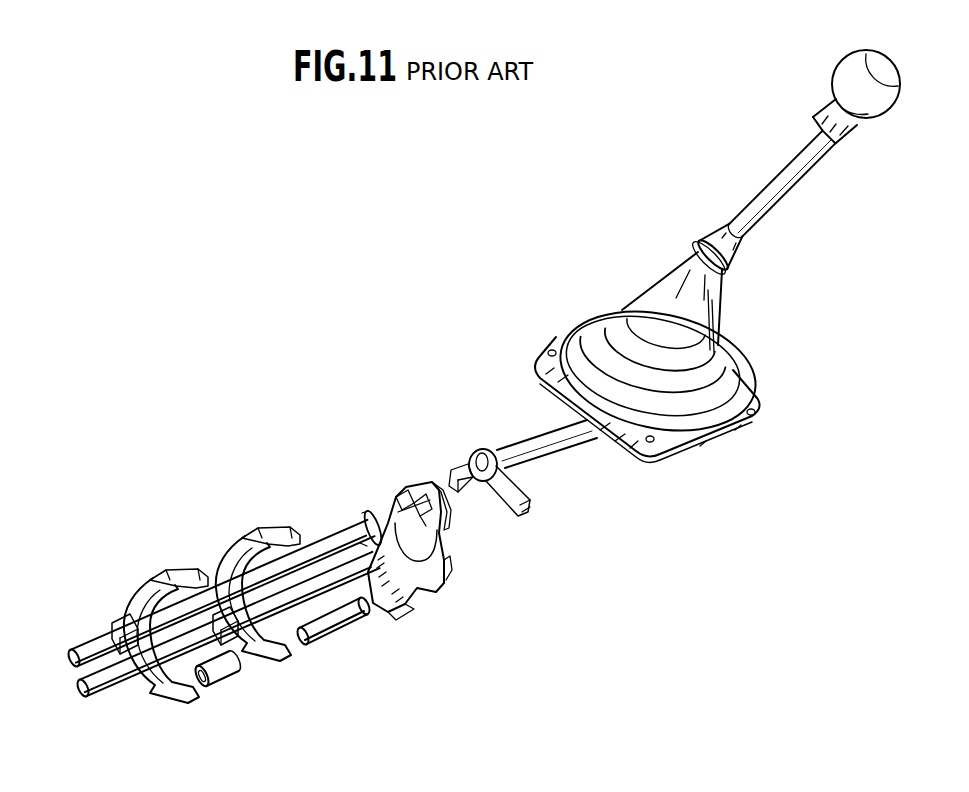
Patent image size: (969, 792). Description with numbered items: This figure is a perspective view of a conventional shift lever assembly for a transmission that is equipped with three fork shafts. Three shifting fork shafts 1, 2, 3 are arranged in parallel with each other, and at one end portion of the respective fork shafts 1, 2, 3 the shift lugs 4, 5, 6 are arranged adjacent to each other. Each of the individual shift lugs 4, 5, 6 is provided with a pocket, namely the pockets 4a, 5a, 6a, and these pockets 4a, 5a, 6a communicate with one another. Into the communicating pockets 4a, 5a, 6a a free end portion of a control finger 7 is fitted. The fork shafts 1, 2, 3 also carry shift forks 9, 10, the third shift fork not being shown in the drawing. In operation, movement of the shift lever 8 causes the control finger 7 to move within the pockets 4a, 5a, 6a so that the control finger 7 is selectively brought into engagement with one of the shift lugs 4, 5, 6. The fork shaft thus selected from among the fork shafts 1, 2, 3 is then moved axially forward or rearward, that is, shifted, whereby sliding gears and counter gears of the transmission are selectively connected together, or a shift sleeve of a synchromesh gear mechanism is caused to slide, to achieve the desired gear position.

The shifting fork shaft 1 is at (87, 643).
The shifting fork shaft 2 is at (113, 683).
The shifting fork shaft 3 is at (353, 620).
The shift lug 4 is at (414, 521).
The pocket 4a is at (410, 492).
The shift lug 5 is at (443, 503).
The pocket 5a is at (437, 495).
The shift lug 6 is at (437, 520).
The pocket 6a is at (423, 537).
The control finger 7 is at (470, 483).
The shift lever 8 is at (753, 193).
The shift fork 9 is at (147, 580).
The shift fork 10 is at (240, 537).